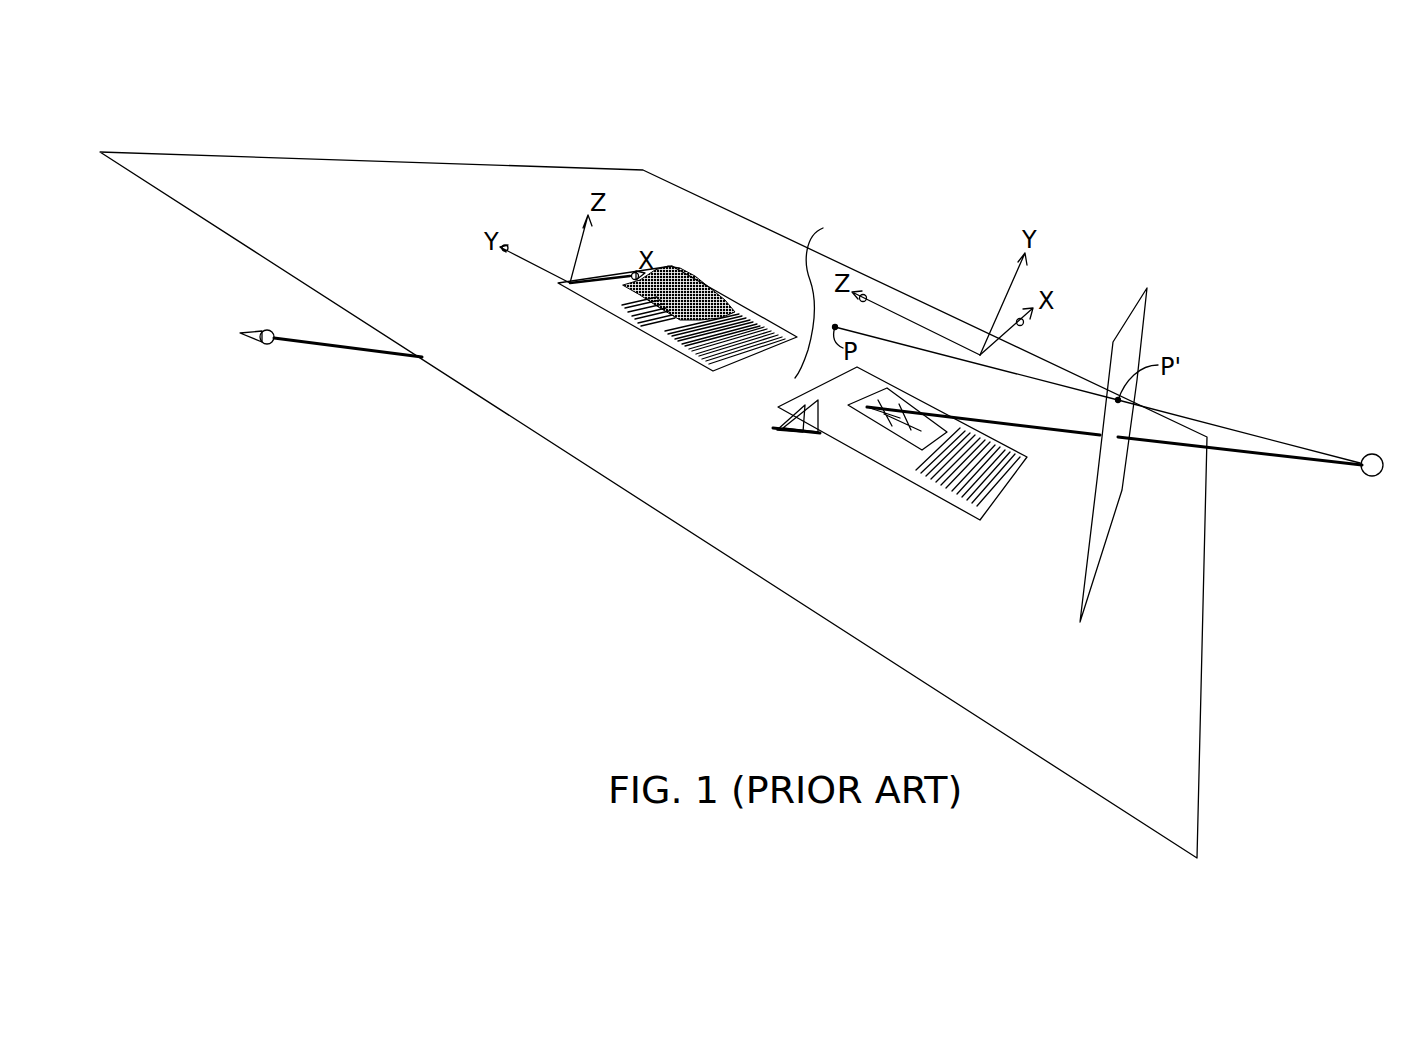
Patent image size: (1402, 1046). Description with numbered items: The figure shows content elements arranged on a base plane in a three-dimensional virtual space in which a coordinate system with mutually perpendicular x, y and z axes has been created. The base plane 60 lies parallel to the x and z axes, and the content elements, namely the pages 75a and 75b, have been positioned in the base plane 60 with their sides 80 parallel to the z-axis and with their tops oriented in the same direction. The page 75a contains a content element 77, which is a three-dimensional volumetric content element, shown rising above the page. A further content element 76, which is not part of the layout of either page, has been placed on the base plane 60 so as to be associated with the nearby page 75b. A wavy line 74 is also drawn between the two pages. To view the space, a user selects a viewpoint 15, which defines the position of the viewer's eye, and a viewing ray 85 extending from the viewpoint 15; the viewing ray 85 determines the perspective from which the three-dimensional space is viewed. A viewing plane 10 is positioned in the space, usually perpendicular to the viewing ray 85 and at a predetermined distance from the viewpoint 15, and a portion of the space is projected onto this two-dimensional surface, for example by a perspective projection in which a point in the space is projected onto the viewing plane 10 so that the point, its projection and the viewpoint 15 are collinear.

The base plane 60 is at (327, 183).
The content element 77 is at (682, 270).
The sides 80 is at (735, 330).
The wavy boundary line 74 is at (825, 296).
The page 75a is at (745, 367).
The content element 76 is at (796, 440).
The page 75b is at (893, 484).
The viewing plane 10 is at (1103, 510).
The viewing ray 85 is at (1263, 455).
The viewpoint 15 is at (1368, 455).